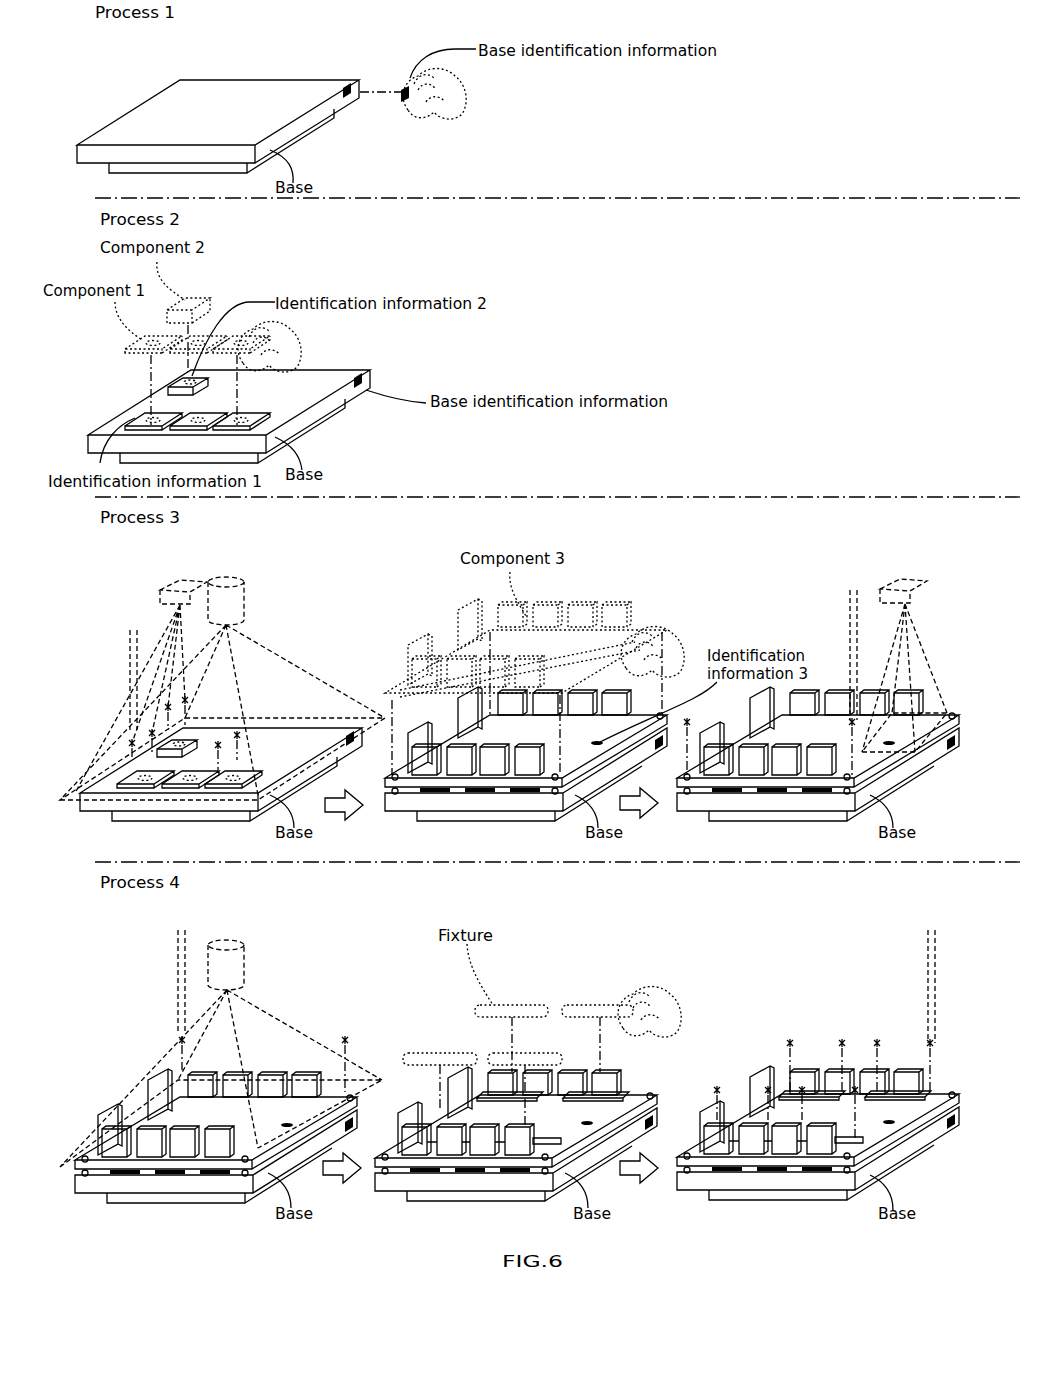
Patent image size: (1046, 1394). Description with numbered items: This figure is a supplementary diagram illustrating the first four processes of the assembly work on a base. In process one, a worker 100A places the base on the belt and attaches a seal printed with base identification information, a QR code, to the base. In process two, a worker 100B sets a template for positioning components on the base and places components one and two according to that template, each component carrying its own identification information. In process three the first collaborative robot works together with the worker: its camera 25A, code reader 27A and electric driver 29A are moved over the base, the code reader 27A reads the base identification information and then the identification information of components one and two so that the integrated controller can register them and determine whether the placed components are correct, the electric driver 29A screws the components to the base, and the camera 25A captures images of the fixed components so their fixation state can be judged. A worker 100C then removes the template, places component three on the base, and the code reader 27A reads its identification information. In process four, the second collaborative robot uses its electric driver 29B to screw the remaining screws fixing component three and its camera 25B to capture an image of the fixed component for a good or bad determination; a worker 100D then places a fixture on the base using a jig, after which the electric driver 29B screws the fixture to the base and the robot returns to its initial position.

The camera 25A is at (232, 578).
The code reader 27A is at (912, 579).
The electric driver 29A is at (851, 590).
The camera 25B is at (235, 940).
The electric driver 29B is at (931, 930).
The worker 100A is at (468, 84).
The worker 100B is at (302, 338).
The worker 100C is at (683, 650).
The worker 100D is at (681, 1000).